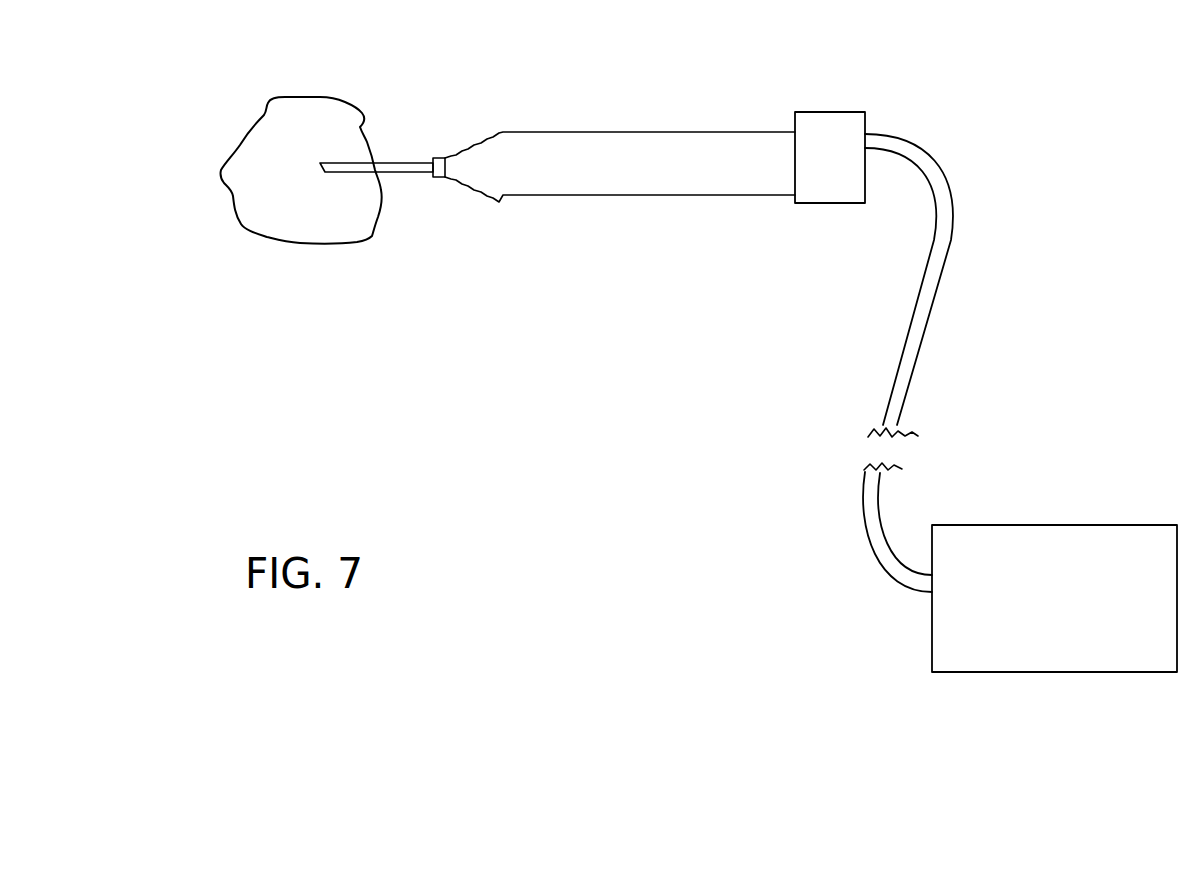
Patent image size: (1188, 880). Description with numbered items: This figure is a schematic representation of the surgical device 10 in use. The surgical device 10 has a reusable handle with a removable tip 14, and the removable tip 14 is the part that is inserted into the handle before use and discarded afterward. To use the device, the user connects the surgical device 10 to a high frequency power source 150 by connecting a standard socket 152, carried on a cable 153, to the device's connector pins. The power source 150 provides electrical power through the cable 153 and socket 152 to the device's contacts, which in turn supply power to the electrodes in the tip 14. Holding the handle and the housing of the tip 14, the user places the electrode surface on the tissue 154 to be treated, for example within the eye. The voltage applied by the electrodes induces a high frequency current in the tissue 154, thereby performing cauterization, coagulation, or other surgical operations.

The surgical device 10 is at (594, 118).
The removable tip 14 is at (416, 189).
The high frequency power source 150 is at (1098, 523).
The standard socket 152 is at (857, 108).
The cable 153 is at (917, 353).
The tissue 154 is at (333, 108).